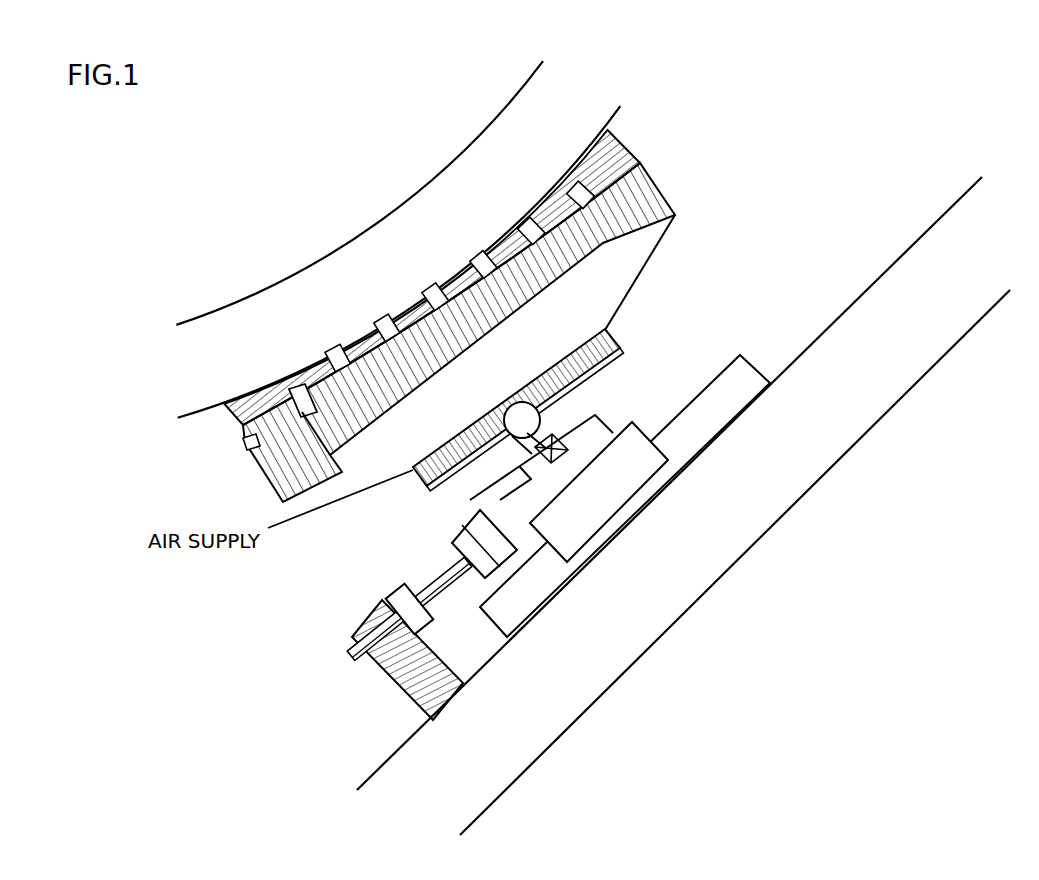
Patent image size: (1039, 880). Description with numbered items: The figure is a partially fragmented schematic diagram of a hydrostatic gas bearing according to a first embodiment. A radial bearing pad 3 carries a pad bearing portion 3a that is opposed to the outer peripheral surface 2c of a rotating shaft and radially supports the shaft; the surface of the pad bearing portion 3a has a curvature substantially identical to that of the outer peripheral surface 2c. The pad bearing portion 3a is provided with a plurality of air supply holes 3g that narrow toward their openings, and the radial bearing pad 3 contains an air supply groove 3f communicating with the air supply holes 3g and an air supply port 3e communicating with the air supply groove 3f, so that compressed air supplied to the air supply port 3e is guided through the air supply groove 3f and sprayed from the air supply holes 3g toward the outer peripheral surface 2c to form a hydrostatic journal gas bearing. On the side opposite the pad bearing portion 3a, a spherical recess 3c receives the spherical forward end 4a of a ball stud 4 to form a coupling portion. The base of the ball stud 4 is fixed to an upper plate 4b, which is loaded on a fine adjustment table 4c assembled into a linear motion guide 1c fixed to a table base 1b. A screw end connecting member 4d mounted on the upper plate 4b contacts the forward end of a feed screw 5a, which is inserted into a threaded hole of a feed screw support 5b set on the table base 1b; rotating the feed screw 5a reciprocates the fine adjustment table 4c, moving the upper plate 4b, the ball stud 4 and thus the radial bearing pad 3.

The table base 1b is at (757, 502).
The linear motion guide 1c is at (722, 388).
The outer peripheral surface 2c is at (613, 121).
The radial bearing pad 3 is at (648, 192).
The pad bearing portion 3a is at (618, 162).
The recess 3c is at (525, 402).
The air supply port 3e is at (319, 440).
The air supply groove 3f is at (322, 412).
The air supply holes 3g is at (280, 412).
The ball stud 4 is at (527, 447).
The spherical forward end 4a is at (430, 486).
The upper plate 4b is at (600, 438).
The fine adjustment table 4c is at (593, 503).
The screw end connecting member 4d is at (467, 548).
The feed screw 5a is at (362, 660).
The feed screw support 5b is at (432, 680).